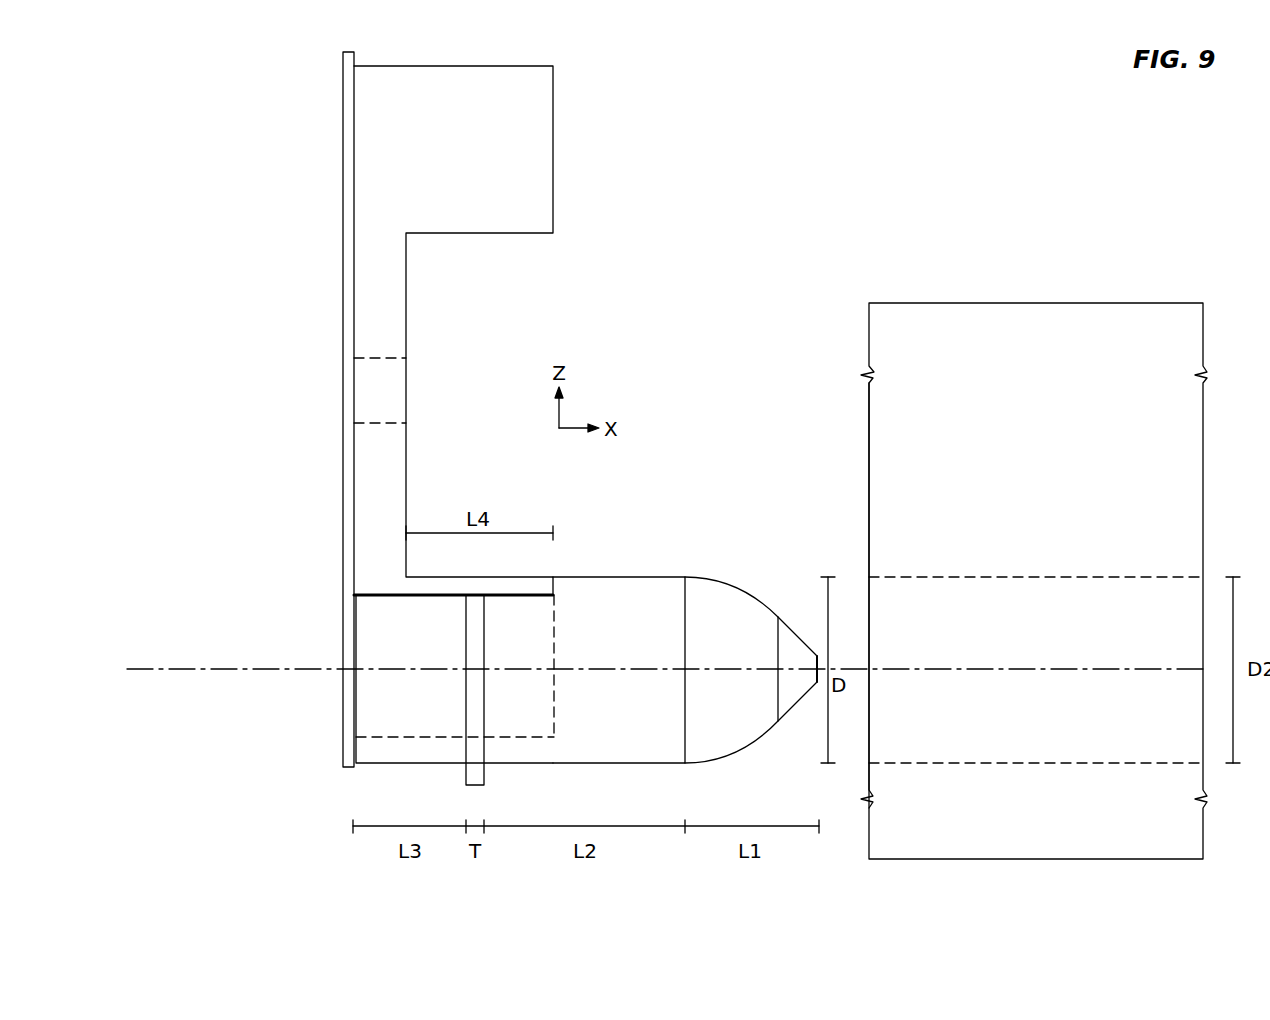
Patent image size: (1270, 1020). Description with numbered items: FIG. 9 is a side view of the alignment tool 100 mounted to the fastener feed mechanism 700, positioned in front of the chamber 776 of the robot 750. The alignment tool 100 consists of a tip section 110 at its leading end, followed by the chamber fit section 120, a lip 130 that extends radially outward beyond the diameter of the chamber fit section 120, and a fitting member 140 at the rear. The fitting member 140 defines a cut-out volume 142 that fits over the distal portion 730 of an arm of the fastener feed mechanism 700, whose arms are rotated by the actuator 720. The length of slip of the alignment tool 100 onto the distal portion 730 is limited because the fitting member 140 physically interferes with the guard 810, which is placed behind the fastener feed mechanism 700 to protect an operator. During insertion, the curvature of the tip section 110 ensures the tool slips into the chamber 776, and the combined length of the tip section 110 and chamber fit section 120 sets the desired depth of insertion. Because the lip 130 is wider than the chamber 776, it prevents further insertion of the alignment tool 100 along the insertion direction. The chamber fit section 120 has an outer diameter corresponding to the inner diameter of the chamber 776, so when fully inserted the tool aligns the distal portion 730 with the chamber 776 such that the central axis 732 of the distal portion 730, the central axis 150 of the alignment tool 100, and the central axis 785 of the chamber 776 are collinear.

The alignment tool 100 is at (702, 535).
The tip section 110 is at (725, 745).
The chamber fit section 120 is at (594, 746).
The lip 130 is at (476, 770).
The fitting member 140 is at (435, 752).
The cut-out volume 142 is at (358, 715).
The central axis 150 is at (845, 668).
The fastener feed mechanism 700 is at (290, 531).
The actuator 720 is at (366, 412).
The distal portion 730 is at (462, 66).
The central axis 732 is at (238, 668).
The robot 750 is at (1058, 303).
The chamber 776 is at (1048, 577).
The central axis 785 is at (1056, 668).
The guard 810 is at (343, 299).